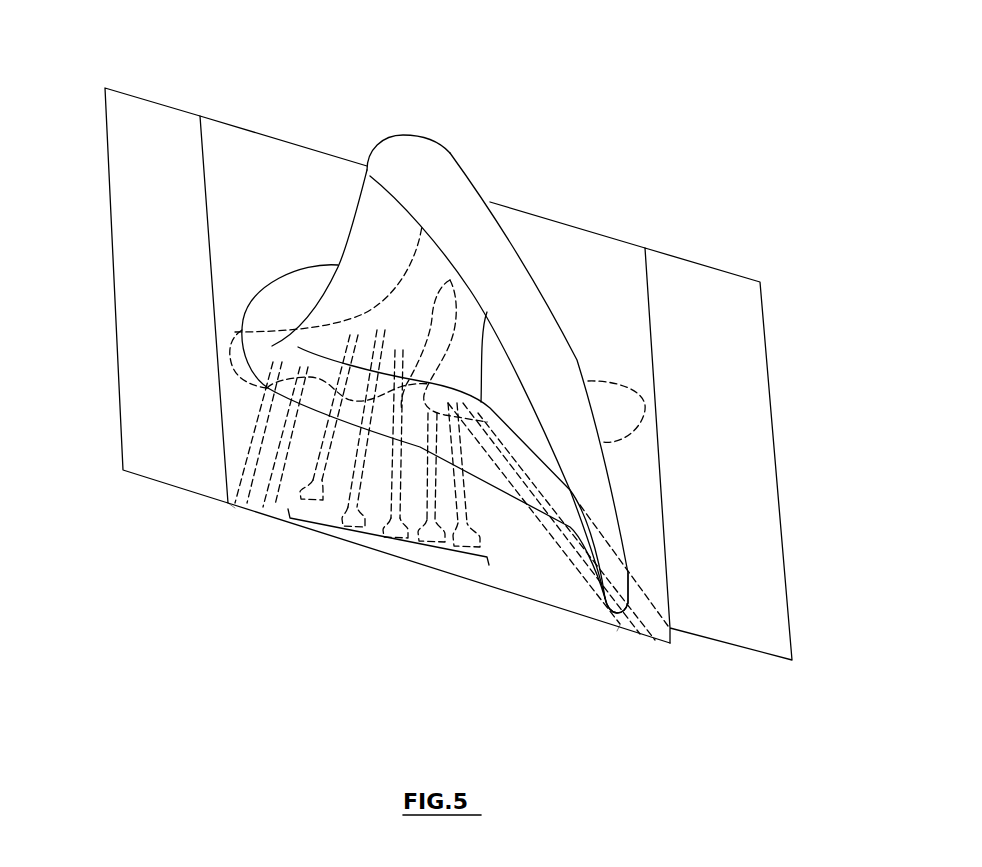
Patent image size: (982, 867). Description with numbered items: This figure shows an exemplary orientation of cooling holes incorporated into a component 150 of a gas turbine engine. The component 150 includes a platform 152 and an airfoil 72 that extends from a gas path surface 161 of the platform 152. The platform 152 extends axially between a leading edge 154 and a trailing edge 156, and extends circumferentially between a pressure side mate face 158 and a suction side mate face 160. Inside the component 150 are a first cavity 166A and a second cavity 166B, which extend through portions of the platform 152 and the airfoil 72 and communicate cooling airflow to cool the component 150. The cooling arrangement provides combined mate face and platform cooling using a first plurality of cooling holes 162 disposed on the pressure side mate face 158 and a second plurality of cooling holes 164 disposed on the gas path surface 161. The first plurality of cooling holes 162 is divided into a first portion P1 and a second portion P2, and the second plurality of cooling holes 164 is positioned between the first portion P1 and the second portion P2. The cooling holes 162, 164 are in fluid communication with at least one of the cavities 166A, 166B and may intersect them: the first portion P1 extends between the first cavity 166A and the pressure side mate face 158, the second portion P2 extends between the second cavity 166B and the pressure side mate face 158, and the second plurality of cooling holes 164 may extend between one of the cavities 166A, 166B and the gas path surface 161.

The component 150 is at (478, 88).
The airfoil 72 is at (463, 223).
The platform 152 is at (575, 243).
The leading edge 154 is at (115, 282).
The trailing edge 156 is at (775, 442).
The pressure side mate face 158 is at (478, 585).
The suction side mate face 160 is at (296, 145).
The gas path surface 161 is at (520, 565).
The first plurality of cooling holes 162 is at (245, 526).
The second plurality of cooling holes 164 is at (385, 546).
The first cavity 166A is at (402, 307).
The second cavity 166B is at (487, 312).
The first portion of cooling holes P1 is at (235, 508).
The second portion of cooling holes P2 is at (617, 631).